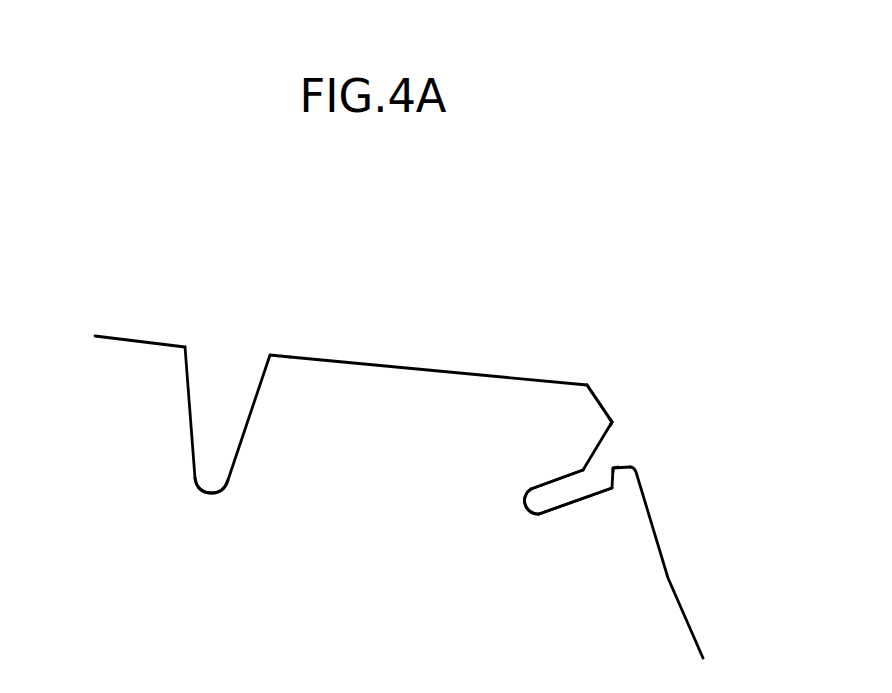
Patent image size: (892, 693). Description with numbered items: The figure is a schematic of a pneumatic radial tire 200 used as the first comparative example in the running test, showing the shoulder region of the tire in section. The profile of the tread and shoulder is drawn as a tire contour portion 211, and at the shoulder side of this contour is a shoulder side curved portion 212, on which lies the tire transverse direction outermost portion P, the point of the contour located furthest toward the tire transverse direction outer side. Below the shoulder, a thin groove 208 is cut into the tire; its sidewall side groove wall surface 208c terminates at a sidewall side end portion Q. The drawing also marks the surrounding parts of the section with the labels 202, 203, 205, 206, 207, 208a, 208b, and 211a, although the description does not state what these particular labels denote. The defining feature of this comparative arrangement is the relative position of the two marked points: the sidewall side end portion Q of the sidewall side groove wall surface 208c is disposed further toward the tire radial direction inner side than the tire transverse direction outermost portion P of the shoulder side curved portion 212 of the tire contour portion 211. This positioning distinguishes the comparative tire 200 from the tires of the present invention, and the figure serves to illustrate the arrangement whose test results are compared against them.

The pneumatic radial tire 200 is at (90, 249).
The groove 202 is at (237, 377).
The inclined surface 203 is at (472, 348).
The side wall 205 is at (672, 517).
The groove bottom 206 is at (225, 373).
The surface 207 is at (135, 357).
The thin groove 208 is at (578, 487).
The tip end of projection 208a is at (523, 507).
The upper surface of projection 208b is at (557, 478).
The sidewall side groove wall surface 208c is at (567, 508).
The tire contour portion 211 is at (560, 399).
The inclined face of corner portion 211a is at (603, 407).
The shoulder side curved portion 212 is at (595, 427).
The tire transverse direction outermost portion P is at (614, 425).
The sidewall side end portion Q is at (612, 467).